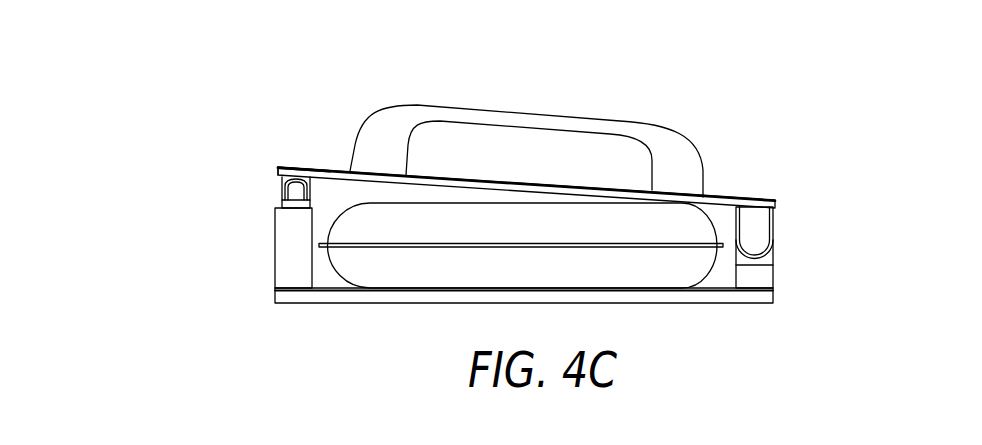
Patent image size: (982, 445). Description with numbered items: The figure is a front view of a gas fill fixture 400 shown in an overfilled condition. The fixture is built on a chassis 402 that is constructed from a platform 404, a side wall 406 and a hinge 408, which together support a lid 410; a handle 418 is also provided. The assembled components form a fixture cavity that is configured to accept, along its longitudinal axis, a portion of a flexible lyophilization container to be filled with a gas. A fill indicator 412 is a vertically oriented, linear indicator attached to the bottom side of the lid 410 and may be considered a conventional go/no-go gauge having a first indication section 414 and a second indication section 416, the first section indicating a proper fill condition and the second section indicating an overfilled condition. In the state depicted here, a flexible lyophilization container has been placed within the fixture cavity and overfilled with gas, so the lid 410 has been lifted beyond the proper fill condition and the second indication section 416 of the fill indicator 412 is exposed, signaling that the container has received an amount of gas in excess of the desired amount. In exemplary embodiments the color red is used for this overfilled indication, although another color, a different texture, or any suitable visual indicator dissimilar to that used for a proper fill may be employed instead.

The gas fill fixture 400 is at (286, 103).
The chassis 402 is at (150, 258).
The platform 404 is at (523, 304).
The side wall 406 is at (275, 248).
The hinge 408 is at (776, 251).
The lid 410 is at (745, 199).
The fill indicator 412 is at (284, 194).
The first indication section 414 is at (297, 166).
The second indication section 416 is at (294, 204).
The handle 418 is at (533, 112).